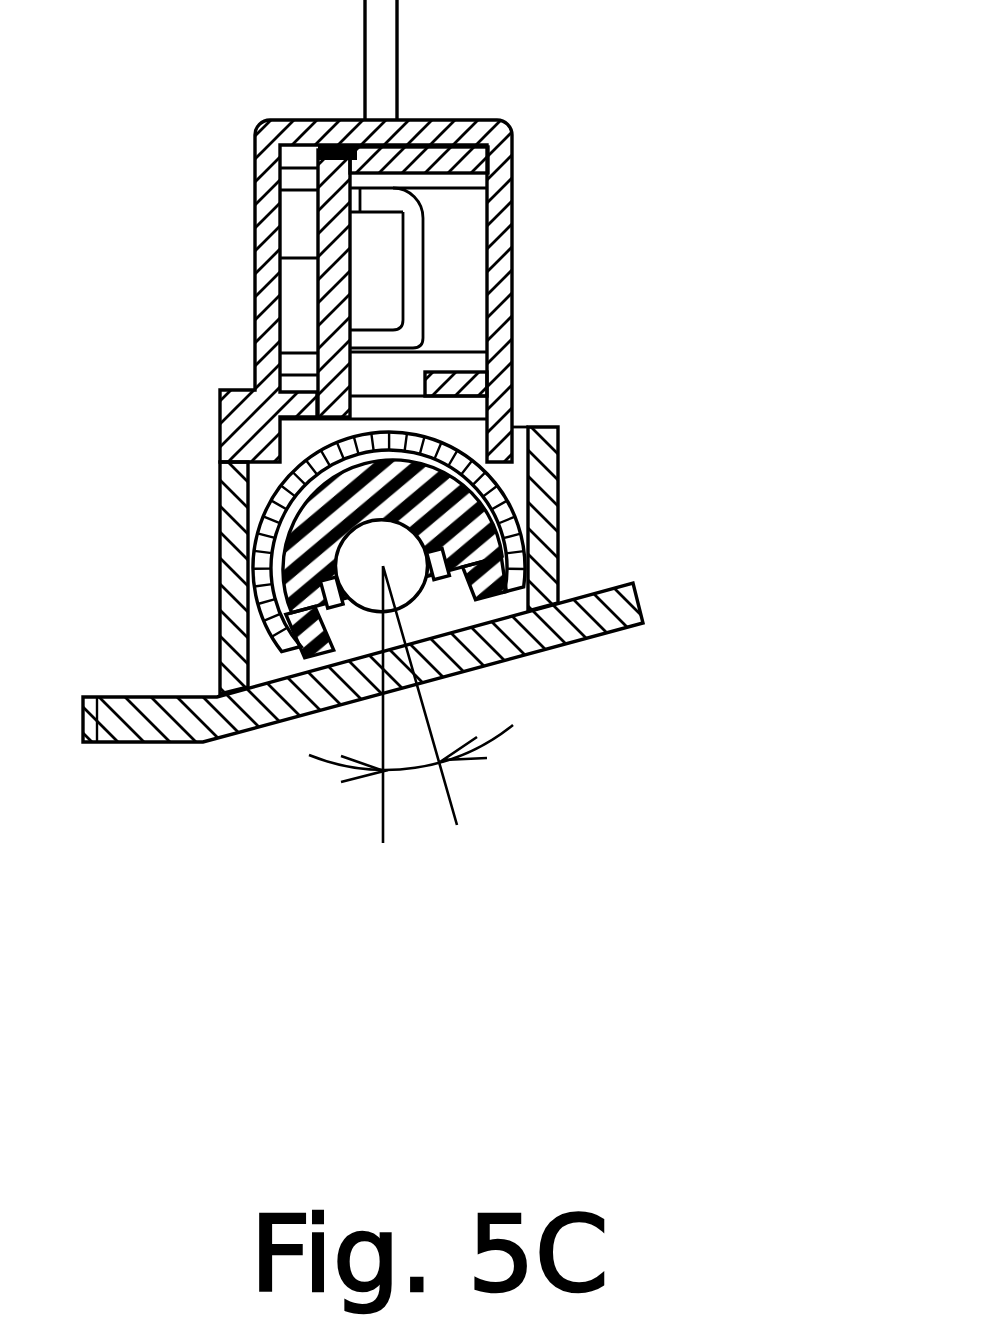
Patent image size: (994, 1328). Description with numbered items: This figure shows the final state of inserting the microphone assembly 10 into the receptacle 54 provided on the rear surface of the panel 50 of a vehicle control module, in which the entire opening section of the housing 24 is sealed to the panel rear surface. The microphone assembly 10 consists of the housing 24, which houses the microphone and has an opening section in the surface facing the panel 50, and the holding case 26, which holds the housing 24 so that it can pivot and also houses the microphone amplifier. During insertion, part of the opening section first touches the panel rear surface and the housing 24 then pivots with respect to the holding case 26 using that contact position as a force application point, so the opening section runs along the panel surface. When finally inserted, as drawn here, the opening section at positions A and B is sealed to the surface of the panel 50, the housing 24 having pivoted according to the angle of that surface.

The microphone assembly 10 is at (551, 329).
The housing 24 is at (502, 502).
The holding case 26 is at (512, 240).
The panel 50 is at (587, 637).
The receptacle 54 is at (220, 597).
The position A of the opening section A is at (508, 612).
The position B of the opening section B is at (300, 655).